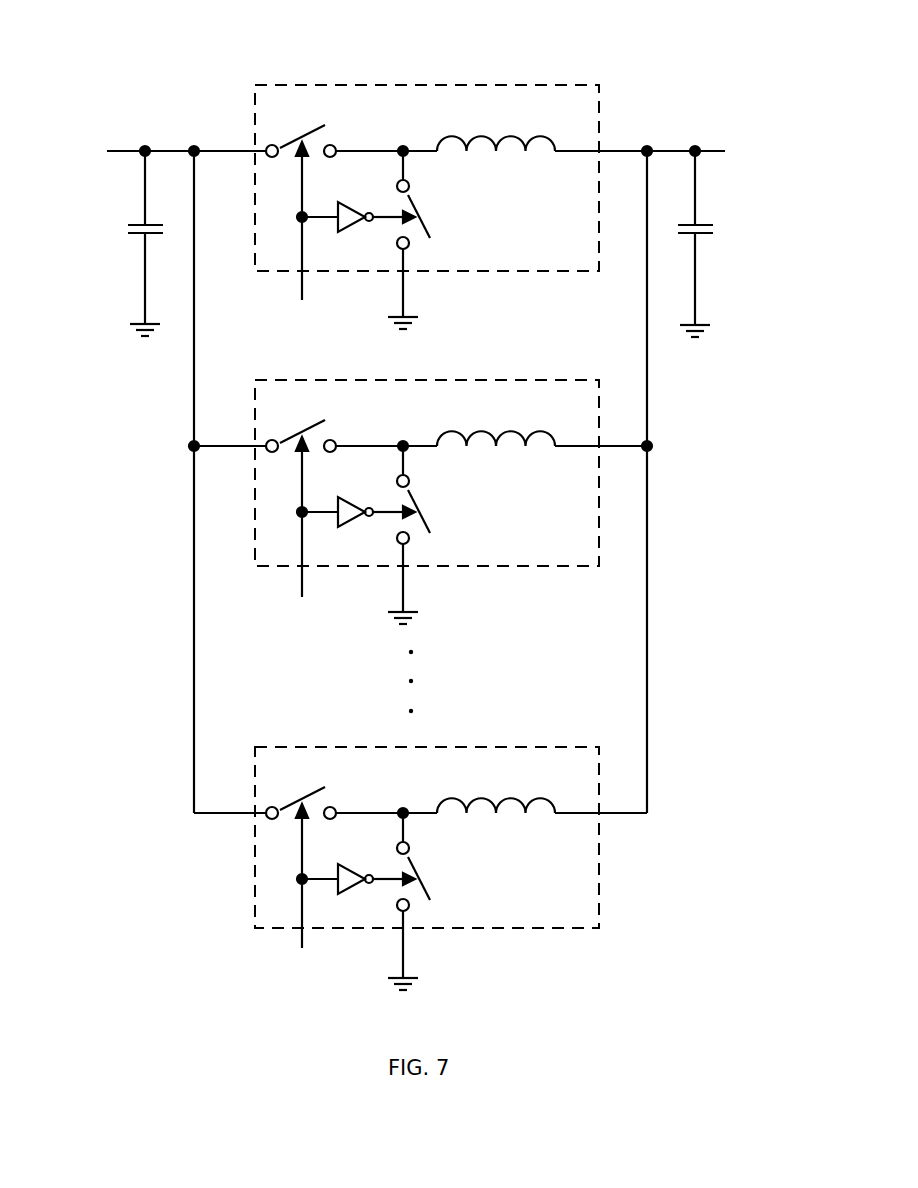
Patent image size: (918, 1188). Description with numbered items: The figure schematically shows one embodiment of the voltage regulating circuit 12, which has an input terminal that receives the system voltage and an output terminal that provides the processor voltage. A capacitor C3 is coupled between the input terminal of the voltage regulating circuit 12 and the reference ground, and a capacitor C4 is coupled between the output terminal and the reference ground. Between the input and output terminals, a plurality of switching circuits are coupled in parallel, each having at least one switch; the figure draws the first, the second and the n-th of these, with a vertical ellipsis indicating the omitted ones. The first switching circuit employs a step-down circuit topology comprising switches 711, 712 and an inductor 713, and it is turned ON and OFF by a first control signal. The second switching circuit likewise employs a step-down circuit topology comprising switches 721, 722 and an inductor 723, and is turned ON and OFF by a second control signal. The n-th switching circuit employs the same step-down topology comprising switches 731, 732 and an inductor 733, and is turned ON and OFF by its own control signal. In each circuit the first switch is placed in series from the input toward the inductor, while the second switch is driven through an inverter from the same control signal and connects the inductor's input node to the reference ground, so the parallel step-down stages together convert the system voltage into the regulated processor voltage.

The voltage regulating circuit 12 is at (670, 72).
The switch 711 is at (301, 130).
The switch 712 is at (431, 240).
The inductor 713 is at (496, 128).
The switch 721 is at (301, 425).
The switch 722 is at (431, 535).
The inductor 723 is at (496, 423).
The switch 731 is at (301, 792).
The switch 732 is at (431, 901).
The inductor 733 is at (496, 790).
The capacitor C3 is at (124, 243).
The capacitor C4 is at (715, 244).